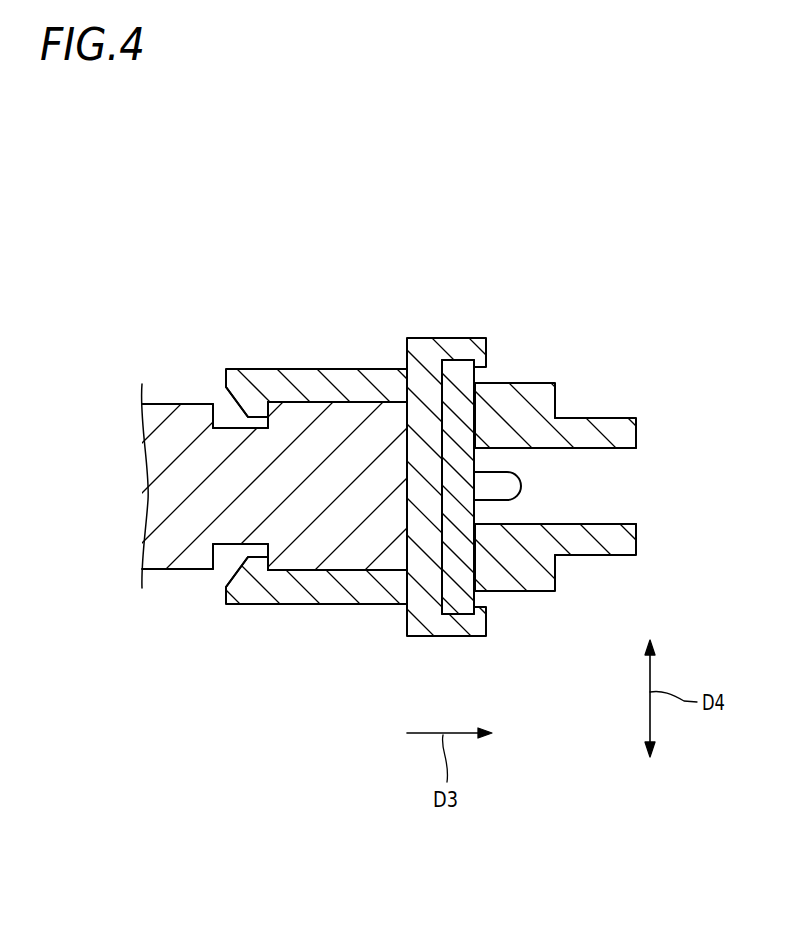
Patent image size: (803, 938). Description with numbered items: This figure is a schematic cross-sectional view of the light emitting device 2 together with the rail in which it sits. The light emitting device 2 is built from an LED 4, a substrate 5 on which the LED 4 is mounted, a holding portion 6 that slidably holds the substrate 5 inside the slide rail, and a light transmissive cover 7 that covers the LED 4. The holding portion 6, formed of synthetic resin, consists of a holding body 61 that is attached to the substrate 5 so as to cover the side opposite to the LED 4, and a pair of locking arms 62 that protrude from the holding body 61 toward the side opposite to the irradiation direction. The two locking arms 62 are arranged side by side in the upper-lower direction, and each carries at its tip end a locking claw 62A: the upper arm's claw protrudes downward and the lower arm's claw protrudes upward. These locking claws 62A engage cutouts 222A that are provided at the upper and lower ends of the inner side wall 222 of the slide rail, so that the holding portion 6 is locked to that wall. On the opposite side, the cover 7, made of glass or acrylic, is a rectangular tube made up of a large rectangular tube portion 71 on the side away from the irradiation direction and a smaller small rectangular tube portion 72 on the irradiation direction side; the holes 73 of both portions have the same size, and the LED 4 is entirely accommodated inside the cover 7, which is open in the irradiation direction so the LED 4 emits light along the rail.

The light emitting device 2 is at (608, 294).
The inner side wall 222 is at (165, 403).
The cutout 222A is at (213, 417).
The locking arm 62 is at (302, 384).
The locking claw 62A is at (258, 416).
The holding portion 6 is at (450, 328).
The holding body 61 is at (417, 346).
The substrate 5 is at (472, 373).
The light transmissive cover 7 is at (516, 603).
The large rectangular tube portion 71 is at (545, 395).
The small rectangular tube portion 72 is at (616, 421).
The hole 73 is at (604, 449).
The LED 4 is at (516, 492).